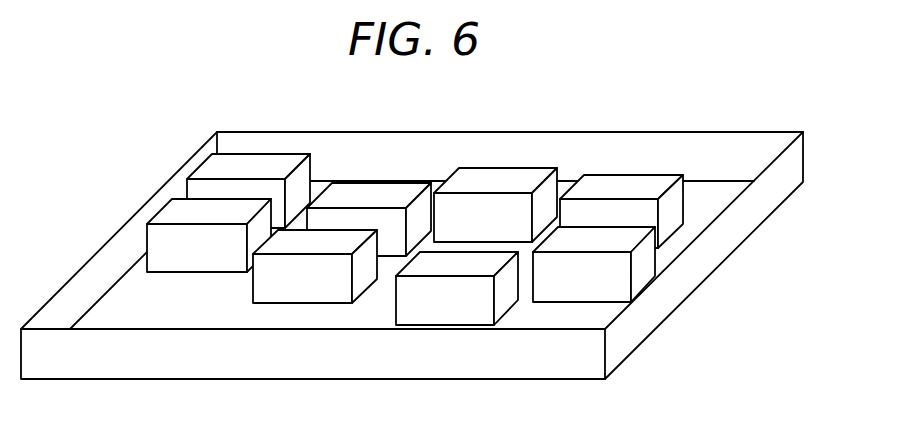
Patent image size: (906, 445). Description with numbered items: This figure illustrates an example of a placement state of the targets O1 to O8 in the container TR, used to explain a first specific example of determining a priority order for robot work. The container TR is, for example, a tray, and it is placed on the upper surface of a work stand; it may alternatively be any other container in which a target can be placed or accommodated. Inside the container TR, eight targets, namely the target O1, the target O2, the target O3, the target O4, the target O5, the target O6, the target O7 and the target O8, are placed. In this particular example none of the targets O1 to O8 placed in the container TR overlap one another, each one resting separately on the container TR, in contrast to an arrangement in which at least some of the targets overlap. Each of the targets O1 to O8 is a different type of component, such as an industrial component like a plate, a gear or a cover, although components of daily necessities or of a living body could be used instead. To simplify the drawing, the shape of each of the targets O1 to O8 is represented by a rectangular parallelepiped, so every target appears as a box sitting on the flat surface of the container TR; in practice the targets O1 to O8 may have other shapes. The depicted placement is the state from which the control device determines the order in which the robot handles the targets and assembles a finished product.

The container TR is at (733, 132).
The target O1 is at (253, 153).
The target O2 is at (365, 188).
The target O3 is at (502, 173).
The target O4 is at (621, 183).
The target O5 is at (315, 297).
The target O6 is at (173, 212).
The target O7 is at (462, 312).
The target O8 is at (640, 280).